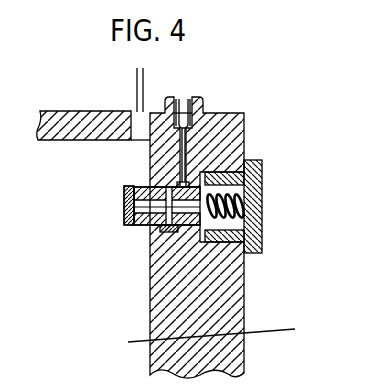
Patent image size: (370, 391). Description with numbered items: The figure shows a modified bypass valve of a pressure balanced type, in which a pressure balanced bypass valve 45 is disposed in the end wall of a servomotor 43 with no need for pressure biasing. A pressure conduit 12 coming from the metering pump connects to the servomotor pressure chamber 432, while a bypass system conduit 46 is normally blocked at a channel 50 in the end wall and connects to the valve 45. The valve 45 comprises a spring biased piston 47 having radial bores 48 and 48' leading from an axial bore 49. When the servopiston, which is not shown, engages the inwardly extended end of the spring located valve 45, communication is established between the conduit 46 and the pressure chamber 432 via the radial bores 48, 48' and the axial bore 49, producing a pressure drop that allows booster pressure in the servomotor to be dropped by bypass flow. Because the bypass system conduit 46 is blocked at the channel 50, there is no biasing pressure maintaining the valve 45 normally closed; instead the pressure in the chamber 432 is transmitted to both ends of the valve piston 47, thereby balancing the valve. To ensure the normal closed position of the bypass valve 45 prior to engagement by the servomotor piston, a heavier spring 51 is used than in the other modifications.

The pressure conduit 12 is at (147, 110).
The servomotor 43 is at (220, 268).
The servomotor pressure chamber 432 is at (231, 329).
The pressure balanced bypass valve 45 is at (130, 234).
The bypass system conduit 46 is at (183, 93).
The spring biased piston 47 is at (147, 222).
The radial bore 48 is at (129, 197).
The radial bore 48' is at (138, 173).
The axial bore 49 is at (150, 205).
The channel 50 is at (150, 263).
The spring 51 is at (250, 195).